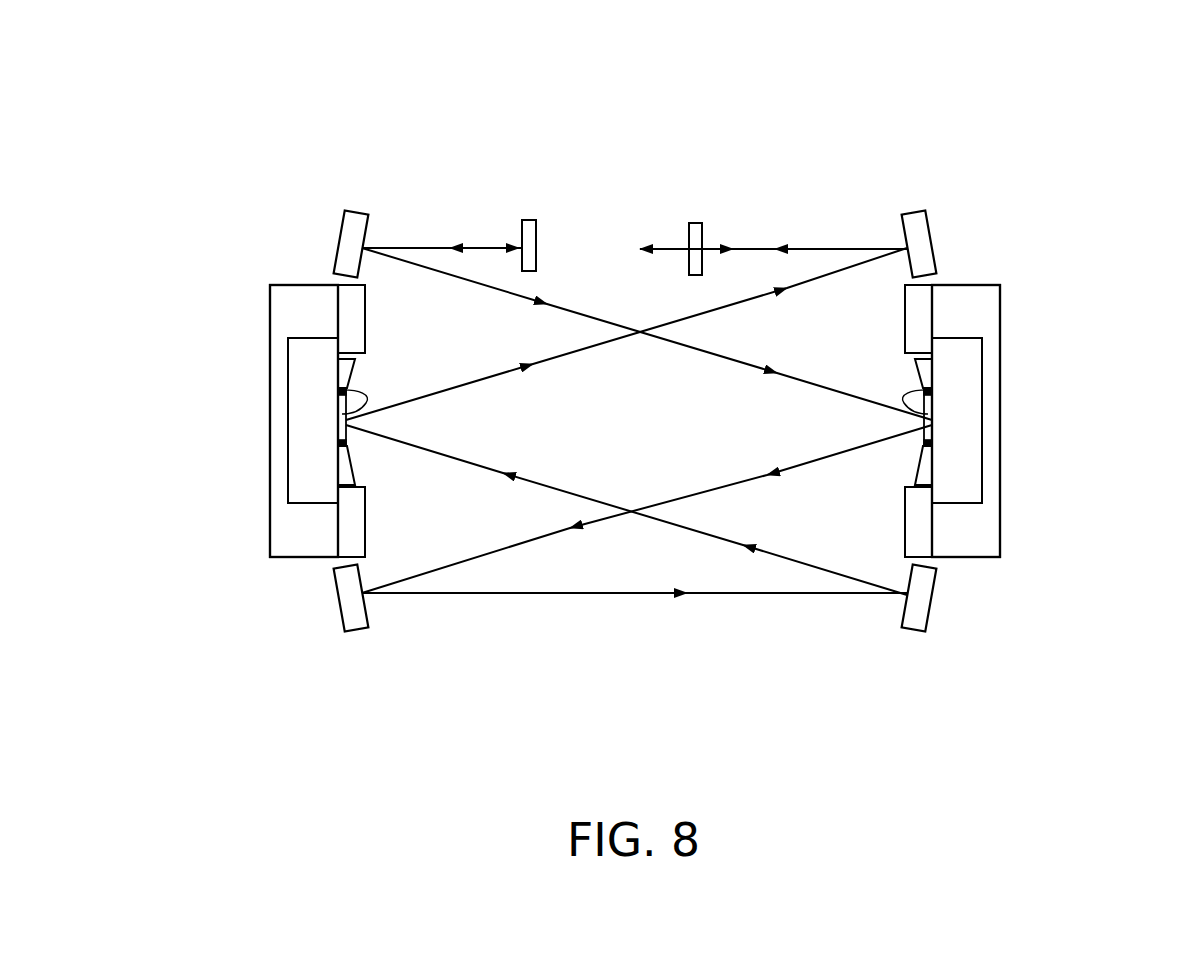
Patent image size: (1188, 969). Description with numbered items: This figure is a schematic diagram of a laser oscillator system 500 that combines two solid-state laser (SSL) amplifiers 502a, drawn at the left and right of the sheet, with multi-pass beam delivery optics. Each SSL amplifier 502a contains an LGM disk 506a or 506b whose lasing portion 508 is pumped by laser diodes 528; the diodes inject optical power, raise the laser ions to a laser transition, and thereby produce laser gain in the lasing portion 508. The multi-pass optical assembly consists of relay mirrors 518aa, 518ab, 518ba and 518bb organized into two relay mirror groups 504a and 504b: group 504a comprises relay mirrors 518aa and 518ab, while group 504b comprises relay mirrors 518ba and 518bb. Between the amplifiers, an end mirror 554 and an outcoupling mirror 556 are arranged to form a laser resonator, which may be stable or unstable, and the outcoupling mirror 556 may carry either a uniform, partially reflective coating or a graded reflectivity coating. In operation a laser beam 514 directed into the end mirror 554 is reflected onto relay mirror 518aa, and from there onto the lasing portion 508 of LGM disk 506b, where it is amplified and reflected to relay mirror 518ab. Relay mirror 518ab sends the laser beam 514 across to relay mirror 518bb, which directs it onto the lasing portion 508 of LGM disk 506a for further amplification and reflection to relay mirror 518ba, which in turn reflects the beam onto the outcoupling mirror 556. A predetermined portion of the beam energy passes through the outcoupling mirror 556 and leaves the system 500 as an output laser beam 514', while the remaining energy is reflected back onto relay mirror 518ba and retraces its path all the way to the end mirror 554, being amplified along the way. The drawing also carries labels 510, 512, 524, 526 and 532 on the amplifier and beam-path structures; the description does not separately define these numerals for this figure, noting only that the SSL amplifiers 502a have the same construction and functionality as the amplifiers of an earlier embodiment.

The laser oscillator system 500 is at (736, 104).
The solid-state laser amplifier 502a is at (298, 283).
The relay mirror group 504a is at (354, 634).
The relay mirror group 504b is at (921, 638).
The LGM disk 506a is at (336, 381).
The LGM disk 506b is at (937, 376).
The lasing portion 508 is at (340, 426).
The lens element 510 is at (345, 455).
The fiber ferrule 512 is at (338, 390).
The laser beam 514 is at (442, 219).
The output laser beam 514' is at (766, 213).
The relay mirror 518aa is at (368, 229).
The relay mirror 518ab is at (367, 609).
The relay mirror 518ba is at (903, 245).
The relay mirror 518bb is at (903, 608).
The crossed beam path 524 is at (605, 320).
The upper block 526 is at (272, 296).
The laser diodes 528 is at (338, 533).
The inner housing 532 is at (300, 337).
The end mirror 554 is at (529, 219).
The outcoupling mirror 556 is at (703, 224).